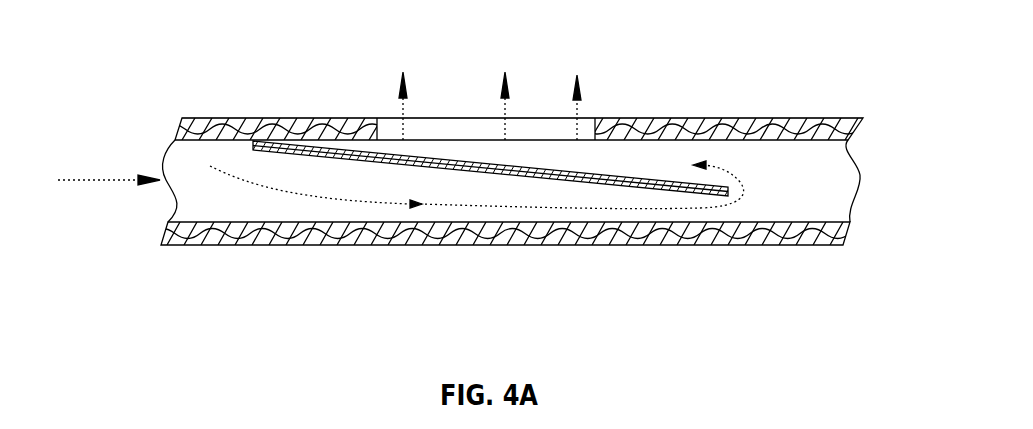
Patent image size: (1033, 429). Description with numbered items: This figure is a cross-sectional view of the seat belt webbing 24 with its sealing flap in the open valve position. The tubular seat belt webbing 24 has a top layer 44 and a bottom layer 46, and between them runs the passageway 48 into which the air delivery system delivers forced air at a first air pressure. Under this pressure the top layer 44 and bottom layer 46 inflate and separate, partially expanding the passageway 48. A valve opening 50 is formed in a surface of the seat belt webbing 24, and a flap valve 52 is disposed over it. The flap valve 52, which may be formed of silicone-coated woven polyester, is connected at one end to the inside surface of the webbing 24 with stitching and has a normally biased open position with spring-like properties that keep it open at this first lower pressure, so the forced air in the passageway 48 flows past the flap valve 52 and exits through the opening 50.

The seat belt webbing 24 is at (767, 110).
The top layer 44 is at (208, 118).
The bottom layer 46 is at (193, 244).
The passageway 48 is at (180, 163).
The valve opening 50 is at (453, 130).
The flap valve 52 is at (537, 167).